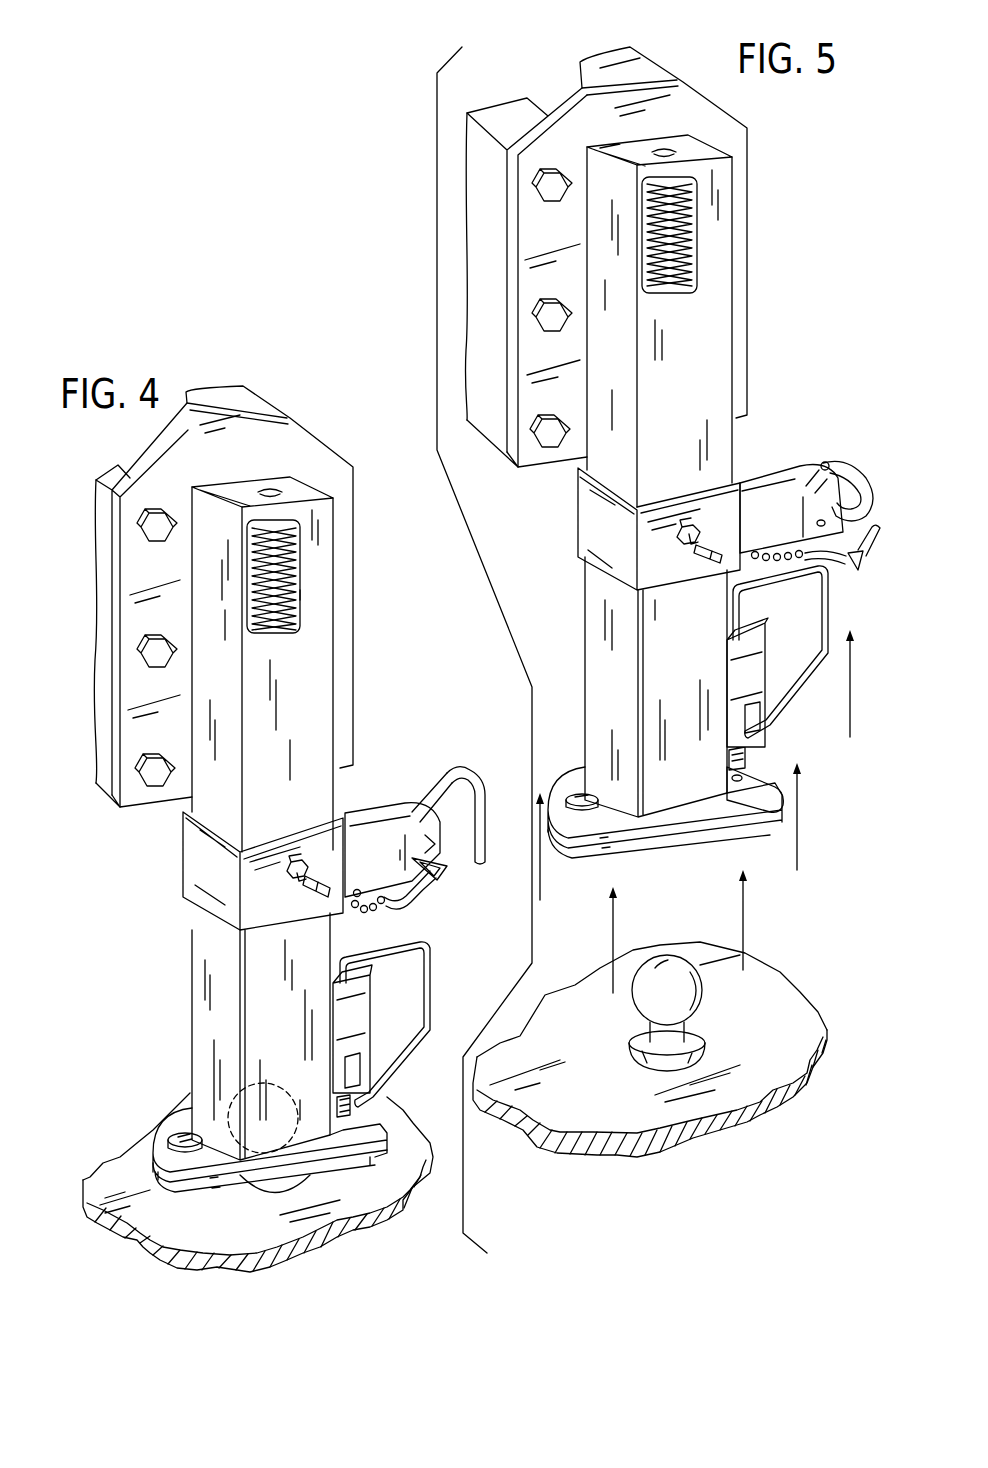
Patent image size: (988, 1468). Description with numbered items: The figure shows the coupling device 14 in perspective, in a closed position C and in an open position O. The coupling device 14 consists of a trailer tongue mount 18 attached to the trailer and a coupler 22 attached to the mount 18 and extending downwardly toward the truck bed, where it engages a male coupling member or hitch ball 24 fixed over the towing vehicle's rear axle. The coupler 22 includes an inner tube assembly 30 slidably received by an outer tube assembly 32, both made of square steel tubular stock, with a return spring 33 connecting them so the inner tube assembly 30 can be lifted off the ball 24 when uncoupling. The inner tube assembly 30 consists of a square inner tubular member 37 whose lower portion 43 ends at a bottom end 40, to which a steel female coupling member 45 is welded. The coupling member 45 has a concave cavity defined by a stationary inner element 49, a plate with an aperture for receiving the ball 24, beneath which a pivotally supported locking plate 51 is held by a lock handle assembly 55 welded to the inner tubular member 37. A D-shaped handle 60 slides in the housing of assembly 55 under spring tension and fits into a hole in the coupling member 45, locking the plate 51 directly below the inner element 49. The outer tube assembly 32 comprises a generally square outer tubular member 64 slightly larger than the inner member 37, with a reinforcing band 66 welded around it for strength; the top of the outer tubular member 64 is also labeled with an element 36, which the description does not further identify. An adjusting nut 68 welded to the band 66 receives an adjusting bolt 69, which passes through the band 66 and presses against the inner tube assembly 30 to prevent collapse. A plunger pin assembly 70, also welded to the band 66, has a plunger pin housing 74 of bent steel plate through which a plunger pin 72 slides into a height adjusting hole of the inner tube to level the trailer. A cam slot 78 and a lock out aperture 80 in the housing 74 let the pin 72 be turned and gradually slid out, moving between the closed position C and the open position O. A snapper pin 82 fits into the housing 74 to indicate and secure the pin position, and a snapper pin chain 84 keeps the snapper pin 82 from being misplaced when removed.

In FIG. 4, the coupling device 14 is at (78, 628).
In FIG. 4, the trailer tongue mount 18 is at (206, 473).
In FIG. 5, the trailer tongue mount 18 is at (498, 238).
In FIG. 4, the coupler 22 is at (158, 923).
In FIG. 5, the coupler 22 is at (796, 360).
In FIG. 5, the hitch ball 24 is at (667, 993).
In FIG. 4, the inner tube assembly 30 is at (217, 1037).
In FIG. 4, the outer tube assembly 32 is at (342, 637).
In FIG. 4, the return spring 33 is at (296, 583).
In FIG. 5, the return spring 33 is at (700, 238).
In FIG. 4, the top cap of outer tube 36 is at (300, 488).
In FIG. 4, the inner tubular member 37 is at (260, 1021).
In FIG. 5, the inner tubular member 37 is at (649, 670).
In FIG. 4, the bottom end 40 is at (307, 1137).
In FIG. 4, the lower portion 43 is at (209, 1068).
In FIG. 4, the female coupling member 45 is at (153, 1136).
In FIG. 5, the female coupling member 45 is at (590, 857).
In FIG. 4, the stationary inner element 49 is at (168, 1166).
In FIG. 4, the locking plate 51 is at (216, 1192).
In FIG. 5, the locking plate 51 is at (696, 840).
In FIG. 4, the lock handle assembly 55 is at (437, 981).
In FIG. 5, the lock handle assembly 55 is at (838, 604).
In FIG. 4, the D-shaped handle 60 is at (414, 1052).
In FIG. 5, the D-shaped handle 60 is at (795, 702).
In FIG. 4, the outer tubular member 64 is at (292, 679).
In FIG. 5, the outer tubular member 64 is at (689, 332).
In FIG. 4, the reinforcing band 66 is at (228, 894).
In FIG. 4, the adjusting nut 68 is at (295, 880).
In FIG. 4, the adjusting bolt 69 is at (318, 895).
In FIG. 4, the plunger pin assembly 70 is at (368, 805).
In FIG. 4, the plunger pin 72 is at (475, 832).
In FIG. 5, the plunger pin 72 is at (846, 478).
In FIG. 4, the plunger pin housing 74 is at (362, 877).
In FIG. 4, the cam slot 78 is at (409, 802).
In FIG. 5, the cam slot 78 is at (823, 462).
In FIG. 4, the lock out aperture 80 is at (435, 844).
In FIG. 5, the lock out aperture 80 is at (808, 493).
In FIG. 4, the snapper pin 82 is at (447, 870).
In FIG. 5, the snapper pin 82 is at (870, 545).
In FIG. 4, the snapper pin chain 84 is at (382, 906).
In FIG. 4, the closed position C is at (463, 771).
In FIG. 5, the open position O is at (868, 488).